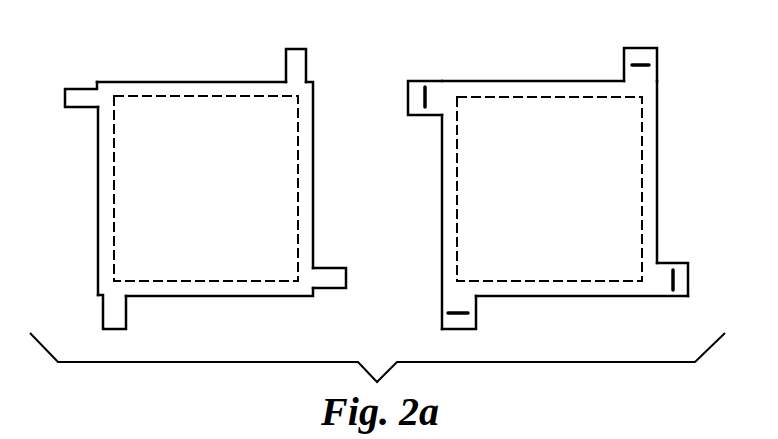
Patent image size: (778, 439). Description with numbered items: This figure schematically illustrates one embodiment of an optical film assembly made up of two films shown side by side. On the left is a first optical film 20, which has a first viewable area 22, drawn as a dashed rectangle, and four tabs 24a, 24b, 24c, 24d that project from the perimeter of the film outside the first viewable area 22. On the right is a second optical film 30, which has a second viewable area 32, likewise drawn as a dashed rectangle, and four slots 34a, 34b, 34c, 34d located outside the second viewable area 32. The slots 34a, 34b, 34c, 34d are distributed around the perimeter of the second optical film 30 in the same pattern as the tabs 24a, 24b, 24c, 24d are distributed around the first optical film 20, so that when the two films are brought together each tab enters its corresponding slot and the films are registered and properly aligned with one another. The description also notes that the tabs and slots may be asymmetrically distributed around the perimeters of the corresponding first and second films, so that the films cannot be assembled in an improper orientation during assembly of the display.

The first optical film 20 is at (139, 38).
The first viewable area 22 is at (230, 283).
The tab 24a is at (82, 88).
The tab 24b is at (103, 312).
The tab 24c is at (335, 292).
The tab 24d is at (286, 65).
The second optical film 30 is at (479, 38).
The second viewable area 32 is at (565, 283).
The slot 34a is at (425, 87).
The slot 34b is at (448, 313).
The slot 34c is at (673, 290).
The slot 34d is at (628, 65).